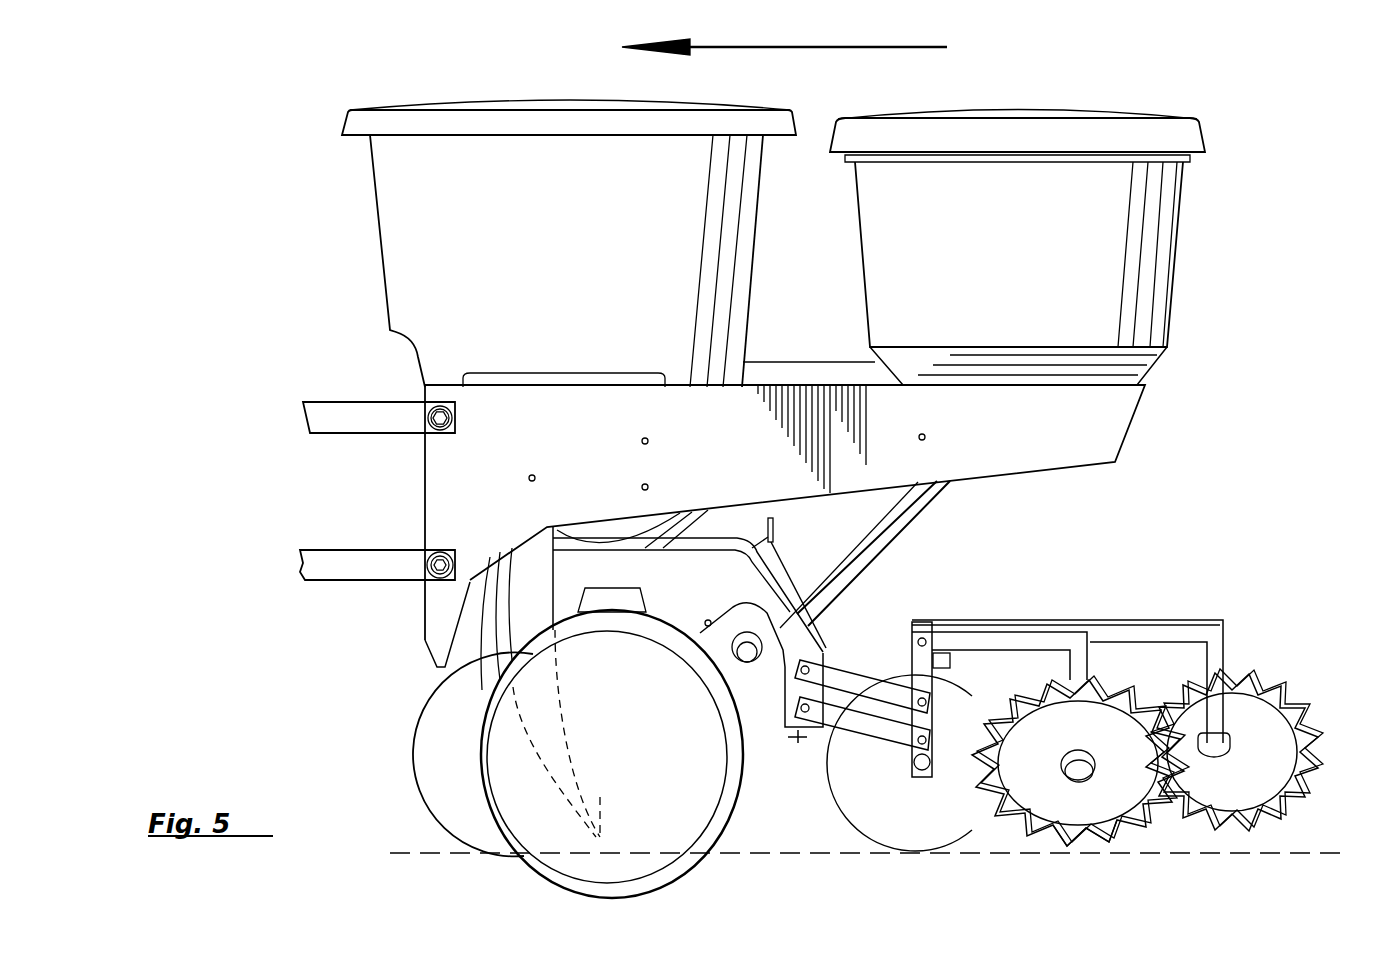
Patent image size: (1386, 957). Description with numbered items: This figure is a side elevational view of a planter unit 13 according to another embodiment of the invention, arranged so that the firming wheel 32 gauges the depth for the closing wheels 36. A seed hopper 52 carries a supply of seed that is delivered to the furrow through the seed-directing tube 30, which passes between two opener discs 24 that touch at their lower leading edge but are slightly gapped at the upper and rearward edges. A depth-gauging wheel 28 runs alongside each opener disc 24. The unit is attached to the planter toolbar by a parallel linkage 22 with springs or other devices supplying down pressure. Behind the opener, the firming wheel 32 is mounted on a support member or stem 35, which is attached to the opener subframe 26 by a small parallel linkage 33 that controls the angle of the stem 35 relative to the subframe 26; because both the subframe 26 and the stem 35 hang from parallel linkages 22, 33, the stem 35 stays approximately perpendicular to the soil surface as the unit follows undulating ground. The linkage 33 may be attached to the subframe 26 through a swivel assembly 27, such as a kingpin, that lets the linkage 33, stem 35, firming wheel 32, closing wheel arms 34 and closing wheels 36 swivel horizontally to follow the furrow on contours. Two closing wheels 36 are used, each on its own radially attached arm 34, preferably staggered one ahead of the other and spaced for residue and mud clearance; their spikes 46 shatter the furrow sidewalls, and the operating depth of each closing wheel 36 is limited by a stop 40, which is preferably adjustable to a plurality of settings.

The planter unit 13 is at (1213, 232).
The seed hopper 52 is at (440, 262).
The parallel linkage 22 is at (327, 425).
The seed-directing tube 30 is at (530, 603).
The opener disc 24 is at (427, 775).
The depth-gauging wheel 28 is at (567, 840).
The opener subframe 26 is at (755, 585).
The swivel assembly 27 is at (792, 747).
The parallel linkage 33 is at (885, 733).
The stem 35 is at (918, 678).
The stop 40 is at (940, 657).
The closing wheel arm 34 is at (1102, 633).
The closing wheel 36 is at (1267, 767).
The spikes 46 is at (1117, 823).
The firming wheel 32 is at (947, 830).